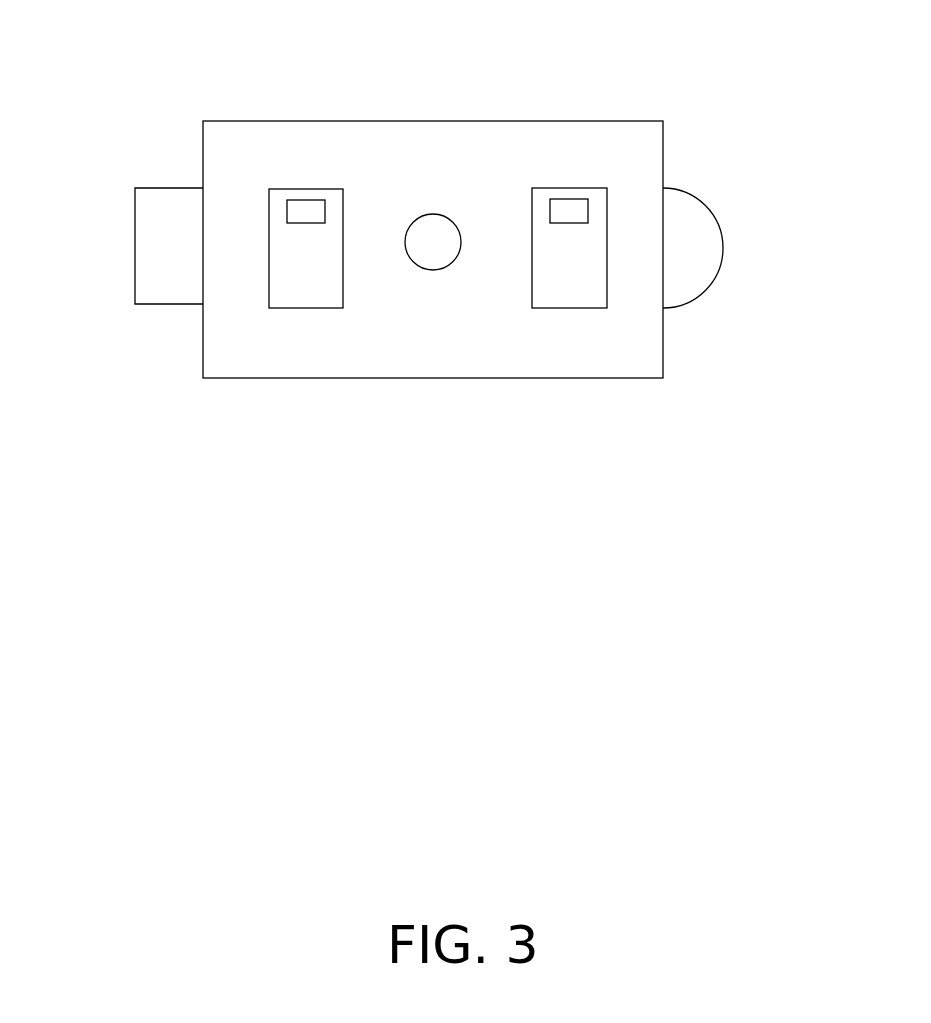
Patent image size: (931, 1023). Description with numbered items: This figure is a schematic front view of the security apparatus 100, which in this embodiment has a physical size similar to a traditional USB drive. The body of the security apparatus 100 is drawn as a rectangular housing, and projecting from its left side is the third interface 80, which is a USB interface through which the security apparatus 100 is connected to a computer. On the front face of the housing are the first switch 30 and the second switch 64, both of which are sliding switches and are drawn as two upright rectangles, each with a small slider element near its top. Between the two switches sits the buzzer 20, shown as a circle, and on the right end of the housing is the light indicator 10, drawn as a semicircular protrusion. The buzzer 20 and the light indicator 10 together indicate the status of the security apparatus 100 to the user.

The security apparatus 100 is at (600, 66).
The light indicator 10 is at (685, 215).
The buzzer 20 is at (427, 252).
The first switch 30 is at (307, 188).
The second switch 64 is at (560, 292).
The third interface 80 is at (162, 188).